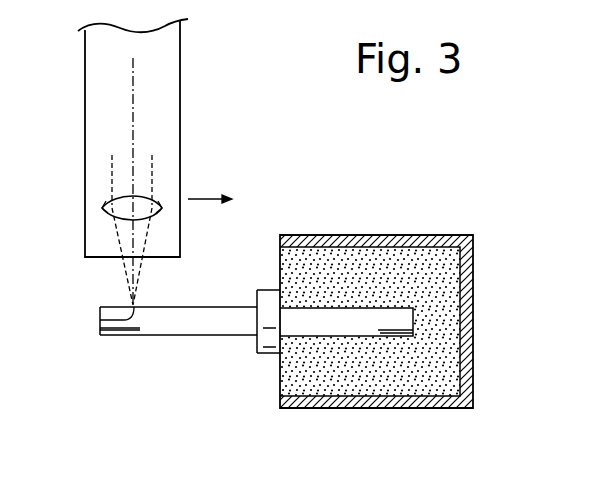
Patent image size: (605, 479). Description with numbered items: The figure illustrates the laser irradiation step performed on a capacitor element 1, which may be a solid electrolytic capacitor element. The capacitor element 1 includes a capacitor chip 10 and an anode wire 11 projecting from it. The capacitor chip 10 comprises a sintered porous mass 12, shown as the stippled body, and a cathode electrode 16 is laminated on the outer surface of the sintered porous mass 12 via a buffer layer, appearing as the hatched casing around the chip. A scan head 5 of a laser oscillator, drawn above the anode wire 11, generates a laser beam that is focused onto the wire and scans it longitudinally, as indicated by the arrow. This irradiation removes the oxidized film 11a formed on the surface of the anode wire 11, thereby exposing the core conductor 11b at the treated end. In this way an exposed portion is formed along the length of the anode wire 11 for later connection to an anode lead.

The capacitor element 1 is at (370, 228).
The scan head 5 is at (178, 100).
The capacitor chip 10 is at (438, 287).
The anode wire 11 is at (215, 305).
The oxidized film 11a is at (178, 333).
The core conductor 11b is at (112, 303).
The sintered porous mass 12 is at (380, 380).
The cathode electrode 16 is at (473, 400).